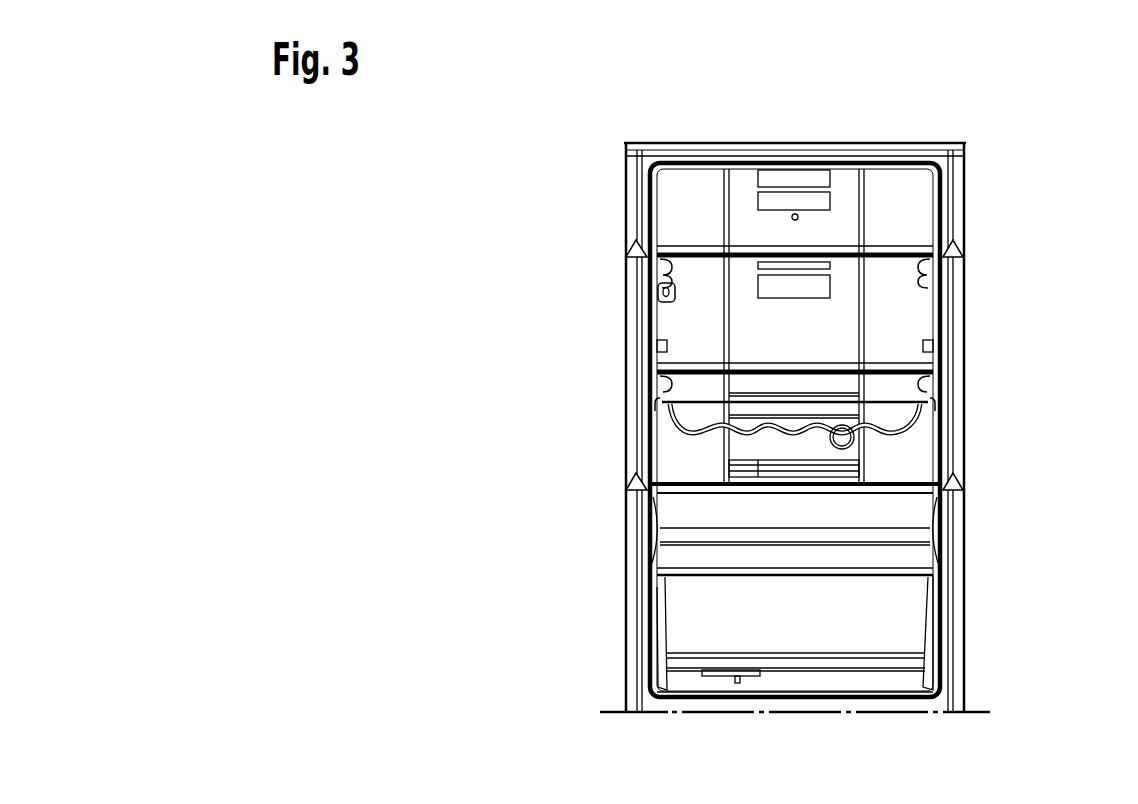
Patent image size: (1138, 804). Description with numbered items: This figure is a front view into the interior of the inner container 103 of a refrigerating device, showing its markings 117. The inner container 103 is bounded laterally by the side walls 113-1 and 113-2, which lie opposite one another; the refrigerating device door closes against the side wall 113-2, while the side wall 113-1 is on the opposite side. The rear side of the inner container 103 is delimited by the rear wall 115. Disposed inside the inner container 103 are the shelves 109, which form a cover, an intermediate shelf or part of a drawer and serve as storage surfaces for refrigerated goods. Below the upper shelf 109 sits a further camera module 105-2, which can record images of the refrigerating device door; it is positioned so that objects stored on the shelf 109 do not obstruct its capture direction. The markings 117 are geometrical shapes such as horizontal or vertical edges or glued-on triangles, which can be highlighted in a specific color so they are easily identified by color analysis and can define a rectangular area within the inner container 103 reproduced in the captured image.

The inner container 103 is at (690, 513).
The camera module 105-2 is at (665, 297).
The shelves 109 is at (935, 372).
The side wall 113-1 is at (627, 666).
The side wall 113-2 is at (965, 632).
The rear wall 115 is at (815, 632).
The markings 117 is at (634, 249).